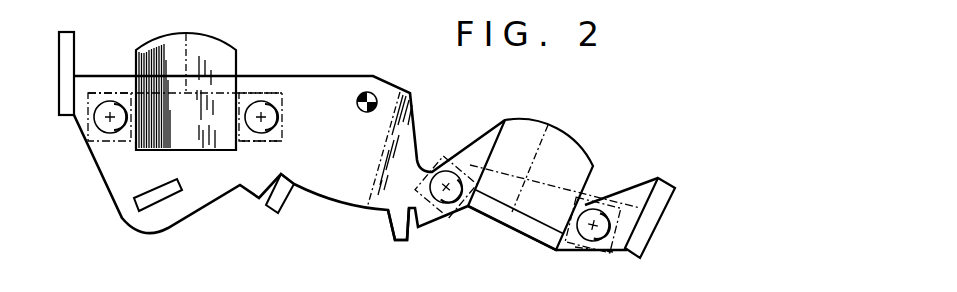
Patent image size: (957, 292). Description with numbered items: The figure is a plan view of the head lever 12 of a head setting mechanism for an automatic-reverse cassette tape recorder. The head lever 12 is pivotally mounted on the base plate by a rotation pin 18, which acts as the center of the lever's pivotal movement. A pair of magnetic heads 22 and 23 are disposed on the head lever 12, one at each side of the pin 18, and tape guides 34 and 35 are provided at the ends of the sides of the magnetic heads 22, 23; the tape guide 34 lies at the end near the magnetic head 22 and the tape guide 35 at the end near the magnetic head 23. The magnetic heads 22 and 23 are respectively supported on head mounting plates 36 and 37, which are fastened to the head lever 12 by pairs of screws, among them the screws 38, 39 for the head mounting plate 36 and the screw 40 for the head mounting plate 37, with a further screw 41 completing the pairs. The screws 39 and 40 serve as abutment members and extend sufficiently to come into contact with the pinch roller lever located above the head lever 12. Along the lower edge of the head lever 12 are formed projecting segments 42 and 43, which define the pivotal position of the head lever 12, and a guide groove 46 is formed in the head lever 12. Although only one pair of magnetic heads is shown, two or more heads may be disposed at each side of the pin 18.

The head lever 12 is at (342, 210).
The rotation pin 18 is at (362, 111).
The magnetic head 22 is at (533, 232).
The magnetic head 23 is at (199, 138).
The tape guide 34 is at (655, 217).
The tape guide 35 is at (60, 58).
The head mounting plate 36 is at (603, 247).
The head mounting plate 37 is at (246, 138).
The screw 38 is at (598, 212).
The screw 39 is at (443, 178).
The screw 40 is at (255, 110).
The roller 41 is at (98, 110).
The projecting segment 42 is at (392, 232).
The projecting segment 43 is at (294, 195).
The guide groove 46 is at (136, 204).